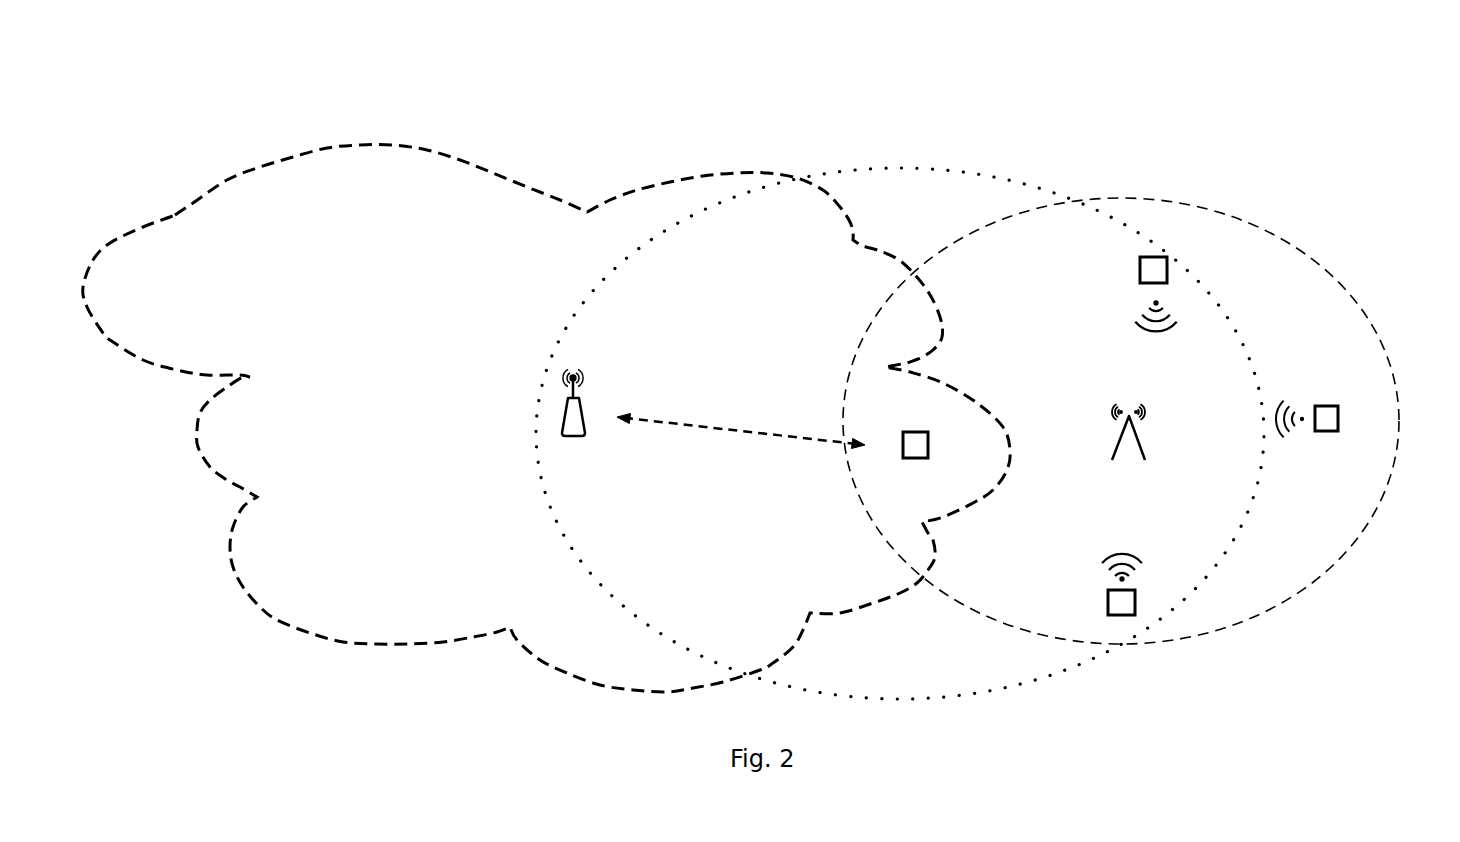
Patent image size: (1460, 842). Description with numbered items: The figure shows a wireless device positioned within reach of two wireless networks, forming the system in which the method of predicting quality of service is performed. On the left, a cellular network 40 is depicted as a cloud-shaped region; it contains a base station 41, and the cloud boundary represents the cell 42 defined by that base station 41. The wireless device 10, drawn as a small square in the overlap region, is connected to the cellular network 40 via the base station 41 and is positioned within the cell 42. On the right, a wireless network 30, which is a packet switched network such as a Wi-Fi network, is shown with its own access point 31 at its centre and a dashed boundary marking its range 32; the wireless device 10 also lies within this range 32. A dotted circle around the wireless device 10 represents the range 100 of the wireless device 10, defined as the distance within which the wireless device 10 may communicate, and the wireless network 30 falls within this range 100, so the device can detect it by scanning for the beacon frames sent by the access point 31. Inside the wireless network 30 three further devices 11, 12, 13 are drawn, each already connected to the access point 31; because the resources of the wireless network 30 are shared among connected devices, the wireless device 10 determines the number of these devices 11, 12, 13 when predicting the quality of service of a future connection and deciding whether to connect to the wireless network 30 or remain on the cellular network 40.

The wireless device 10 is at (913, 458).
The device 11 is at (1140, 270).
The device 12 is at (1332, 429).
The device 13 is at (1117, 615).
The wireless network 30 is at (1147, 385).
The access point 31 is at (1120, 443).
The range 32 is at (1362, 303).
The cellular network 40 is at (547, 374).
The base station 41 is at (562, 422).
The cell 42 is at (460, 160).
The range 100 is at (938, 168).